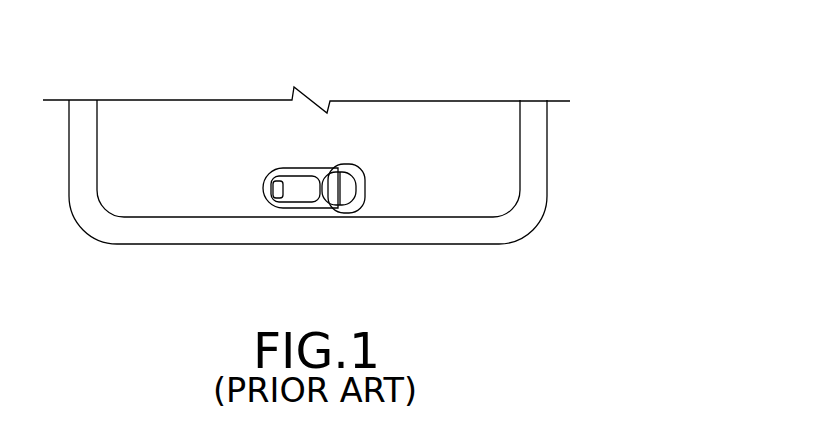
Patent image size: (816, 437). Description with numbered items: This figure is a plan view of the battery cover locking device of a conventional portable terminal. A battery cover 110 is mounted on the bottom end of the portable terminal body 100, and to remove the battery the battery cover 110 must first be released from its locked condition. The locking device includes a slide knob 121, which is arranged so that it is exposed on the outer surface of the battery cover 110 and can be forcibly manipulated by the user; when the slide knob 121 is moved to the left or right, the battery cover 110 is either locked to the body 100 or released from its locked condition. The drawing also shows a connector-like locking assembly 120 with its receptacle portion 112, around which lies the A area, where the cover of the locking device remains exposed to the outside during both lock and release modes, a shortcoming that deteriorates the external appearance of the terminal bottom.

The portable terminal body 100 is at (547, 162).
The battery cover 110 is at (456, 120).
The connector receptacle 112 is at (327, 166).
The connector 120 is at (315, 210).
The slide knob 121 is at (265, 206).
The A area A is at (368, 200).